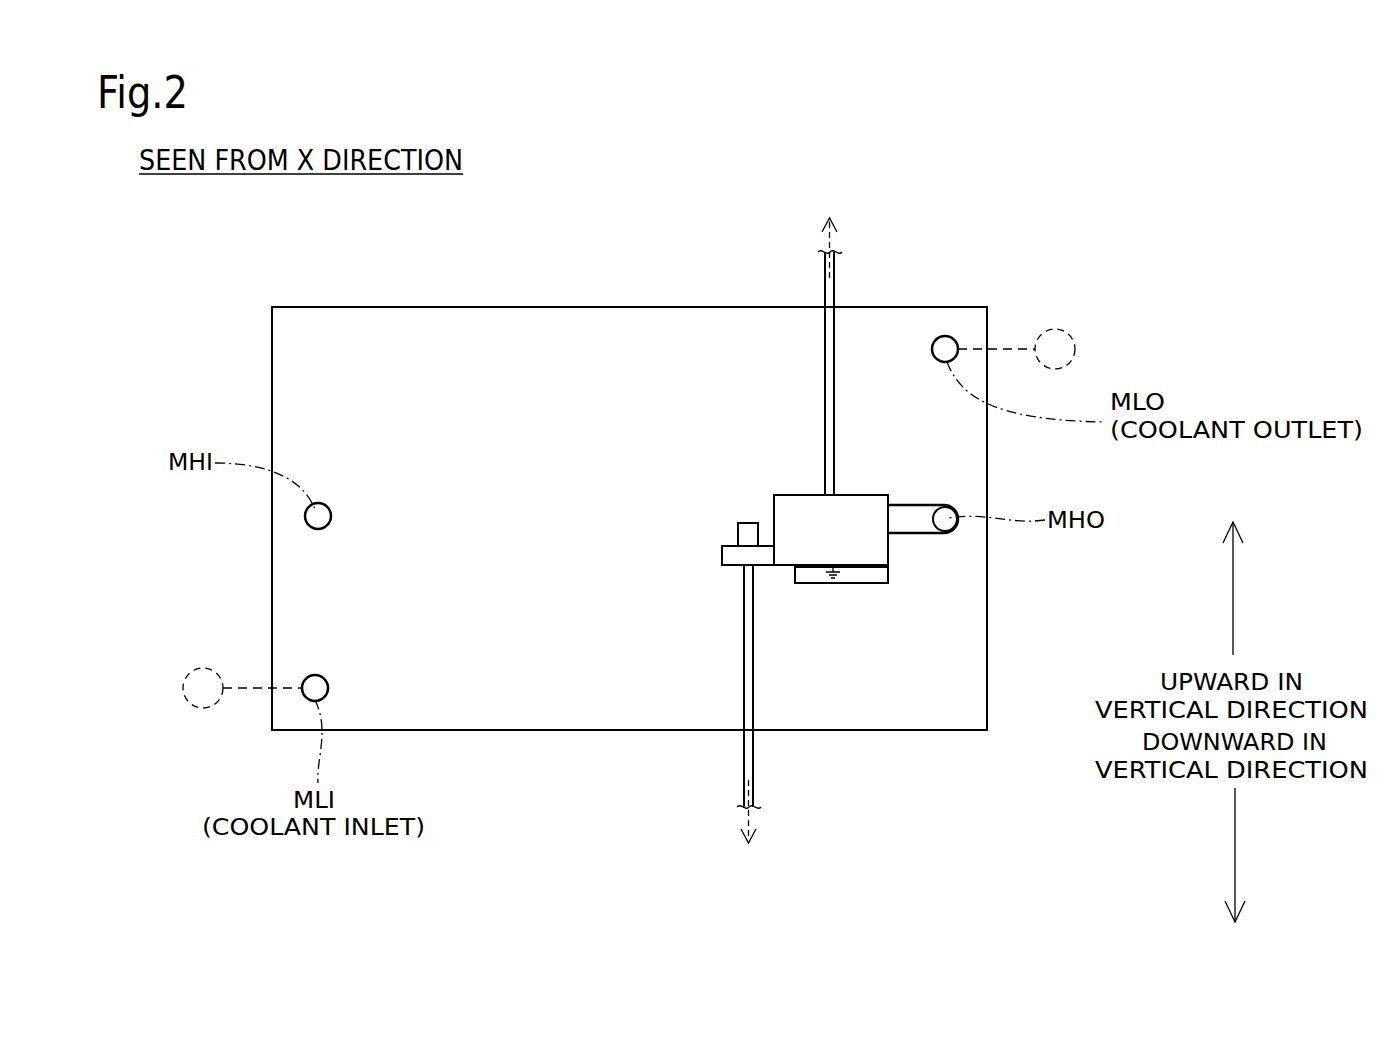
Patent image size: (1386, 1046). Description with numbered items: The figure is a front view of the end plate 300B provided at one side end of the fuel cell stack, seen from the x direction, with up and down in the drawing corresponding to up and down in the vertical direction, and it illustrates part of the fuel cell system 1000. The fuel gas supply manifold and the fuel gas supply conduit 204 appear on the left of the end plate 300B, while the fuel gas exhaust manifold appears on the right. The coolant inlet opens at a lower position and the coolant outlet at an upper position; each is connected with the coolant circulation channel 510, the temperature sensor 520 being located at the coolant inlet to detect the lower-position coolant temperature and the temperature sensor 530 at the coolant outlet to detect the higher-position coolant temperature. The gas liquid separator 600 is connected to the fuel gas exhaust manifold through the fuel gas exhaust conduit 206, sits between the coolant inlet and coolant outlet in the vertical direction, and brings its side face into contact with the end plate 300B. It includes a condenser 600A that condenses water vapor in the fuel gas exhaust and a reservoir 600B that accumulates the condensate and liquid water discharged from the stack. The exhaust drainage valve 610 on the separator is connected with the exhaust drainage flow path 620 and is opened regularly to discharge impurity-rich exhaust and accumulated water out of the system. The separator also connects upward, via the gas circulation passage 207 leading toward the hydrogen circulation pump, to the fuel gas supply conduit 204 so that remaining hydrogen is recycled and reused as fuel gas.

The fuel cell system 1000 is at (500, 252).
The end plate 300B is at (307, 305).
The gas circulation passage 207 is at (825, 330).
The coolant circulation channel 510 is at (945, 337).
The temperature sensor 530 is at (1075, 349).
The temperature sensor 520 is at (183, 688).
The fuel gas supply conduit 204 is at (304, 516).
The fuel gas exhaust conduit 206 is at (912, 535).
The gas liquid separator 600 is at (865, 494).
The reservoir 600B is at (802, 507).
The condenser 600A is at (853, 573).
The exhaust drainage valve 610 is at (722, 547).
The exhaust drainage flow path 620 is at (748, 652).